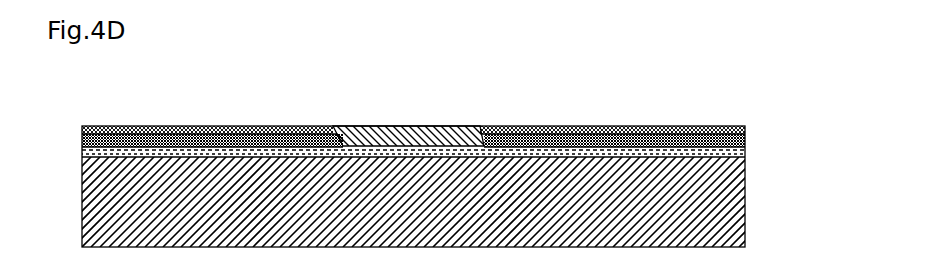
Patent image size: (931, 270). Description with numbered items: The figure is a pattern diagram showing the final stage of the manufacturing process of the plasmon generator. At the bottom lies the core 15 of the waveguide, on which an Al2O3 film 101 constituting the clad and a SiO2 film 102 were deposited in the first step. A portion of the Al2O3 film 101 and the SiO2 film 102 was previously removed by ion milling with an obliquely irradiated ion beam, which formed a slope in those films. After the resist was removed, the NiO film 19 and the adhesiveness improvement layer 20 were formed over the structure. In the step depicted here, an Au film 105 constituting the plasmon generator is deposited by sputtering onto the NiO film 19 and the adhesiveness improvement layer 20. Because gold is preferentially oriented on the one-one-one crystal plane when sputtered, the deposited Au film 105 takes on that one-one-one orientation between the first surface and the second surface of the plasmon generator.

The core 15 is at (745, 200).
The Al2O3 film 101 is at (745, 160).
The SiO2 film 102 is at (745, 150).
The NiO film 19 is at (745, 138).
The adhesiveness improvement layer 20 is at (745, 128).
The Au film 105 is at (423, 126).